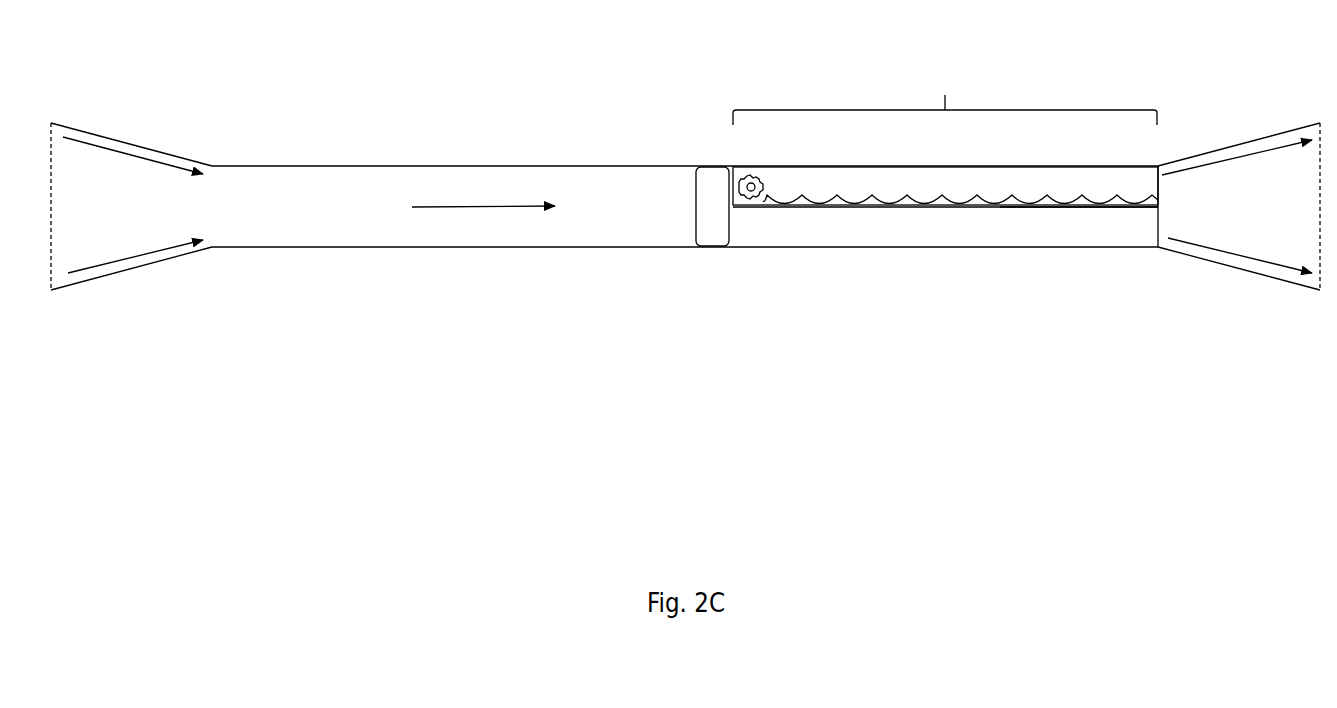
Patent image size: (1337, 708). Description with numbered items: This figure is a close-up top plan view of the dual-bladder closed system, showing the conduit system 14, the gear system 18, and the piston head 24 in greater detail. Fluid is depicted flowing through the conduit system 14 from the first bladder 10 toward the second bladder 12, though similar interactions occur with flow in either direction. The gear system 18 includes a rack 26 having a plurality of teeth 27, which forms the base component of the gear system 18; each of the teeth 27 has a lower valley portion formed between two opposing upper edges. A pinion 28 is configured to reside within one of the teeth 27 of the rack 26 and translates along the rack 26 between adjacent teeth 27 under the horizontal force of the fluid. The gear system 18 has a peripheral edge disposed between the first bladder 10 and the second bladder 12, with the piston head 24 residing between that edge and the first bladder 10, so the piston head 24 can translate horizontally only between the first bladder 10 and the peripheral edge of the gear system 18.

The first bladder 10 is at (92, 132).
The second bladder 12 is at (1263, 136).
The conduit system 14 is at (268, 148).
The gear system 18 is at (945, 90).
The piston head 24 is at (712, 247).
The rack 26 is at (918, 210).
The teeth 27 is at (1063, 207).
The pinion 28 is at (752, 172).